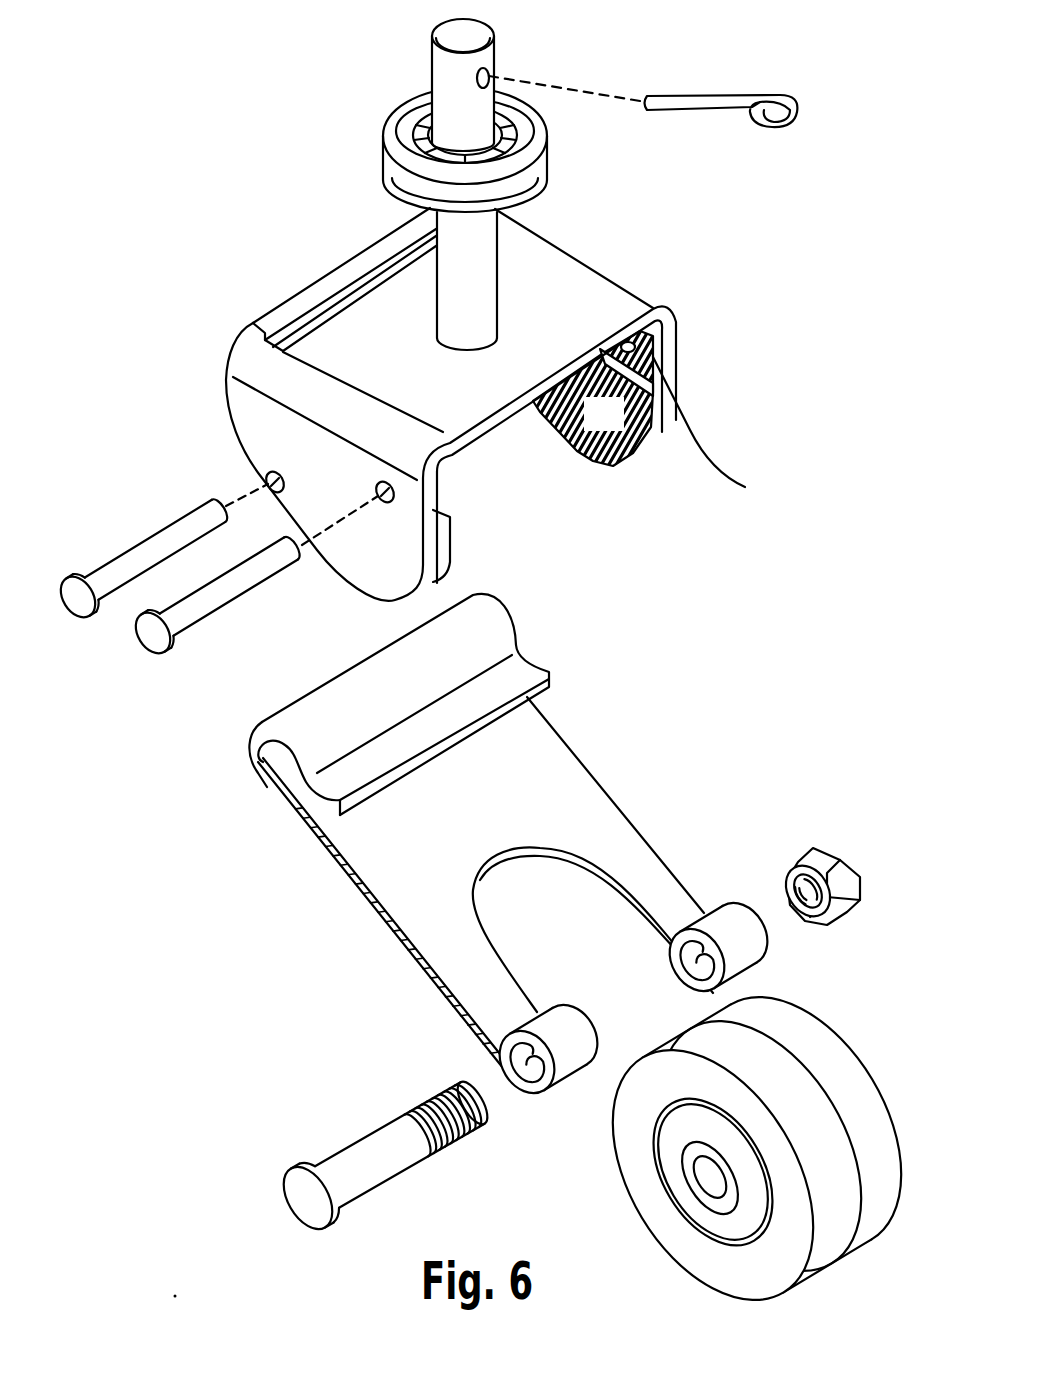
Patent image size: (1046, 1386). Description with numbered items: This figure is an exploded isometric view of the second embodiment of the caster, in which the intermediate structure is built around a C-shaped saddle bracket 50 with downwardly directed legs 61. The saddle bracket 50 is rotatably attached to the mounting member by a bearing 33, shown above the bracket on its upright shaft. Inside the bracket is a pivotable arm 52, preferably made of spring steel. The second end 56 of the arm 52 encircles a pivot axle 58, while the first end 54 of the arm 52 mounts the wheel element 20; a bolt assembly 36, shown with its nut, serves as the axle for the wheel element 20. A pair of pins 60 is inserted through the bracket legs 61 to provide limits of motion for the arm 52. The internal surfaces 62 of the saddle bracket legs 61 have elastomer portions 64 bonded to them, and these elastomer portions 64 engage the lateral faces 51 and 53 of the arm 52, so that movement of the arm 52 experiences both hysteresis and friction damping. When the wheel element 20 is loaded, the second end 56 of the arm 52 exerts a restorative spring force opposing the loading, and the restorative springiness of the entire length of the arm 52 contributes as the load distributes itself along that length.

The wheel element 20 is at (708, 1256).
The bearing 33 is at (552, 147).
The bolt assembly 36 is at (360, 1146).
The C-shaped saddle bracket 50 is at (503, 404).
The lateral face 51 is at (390, 932).
The pivotable arm 52 is at (557, 879).
The lateral face 53 is at (630, 828).
The first end 54 is at (575, 1073).
The second end 56 is at (549, 672).
The pivot axle 58 is at (340, 280).
The pins 60 is at (185, 612).
The saddle bracket legs 61 is at (395, 575).
The internal surfaces 62 is at (437, 490).
The elastomer portions 64 is at (621, 429).